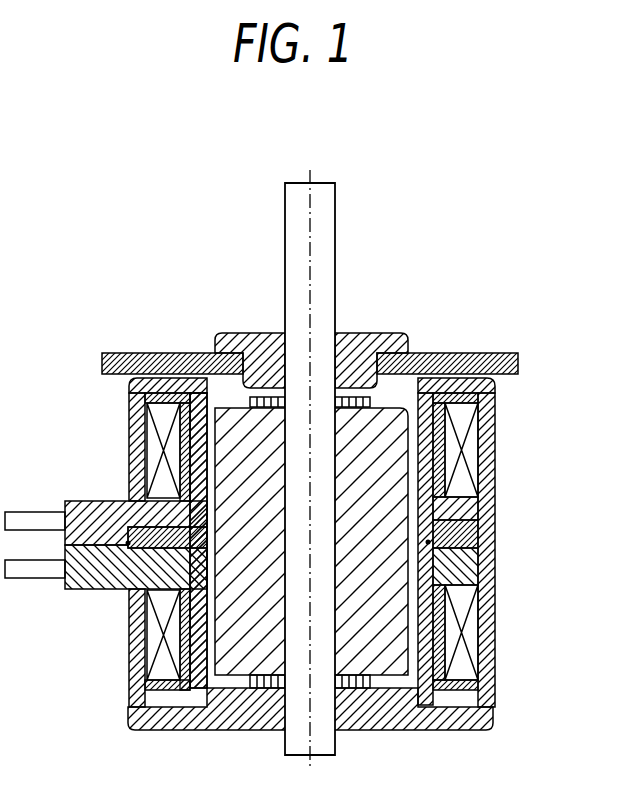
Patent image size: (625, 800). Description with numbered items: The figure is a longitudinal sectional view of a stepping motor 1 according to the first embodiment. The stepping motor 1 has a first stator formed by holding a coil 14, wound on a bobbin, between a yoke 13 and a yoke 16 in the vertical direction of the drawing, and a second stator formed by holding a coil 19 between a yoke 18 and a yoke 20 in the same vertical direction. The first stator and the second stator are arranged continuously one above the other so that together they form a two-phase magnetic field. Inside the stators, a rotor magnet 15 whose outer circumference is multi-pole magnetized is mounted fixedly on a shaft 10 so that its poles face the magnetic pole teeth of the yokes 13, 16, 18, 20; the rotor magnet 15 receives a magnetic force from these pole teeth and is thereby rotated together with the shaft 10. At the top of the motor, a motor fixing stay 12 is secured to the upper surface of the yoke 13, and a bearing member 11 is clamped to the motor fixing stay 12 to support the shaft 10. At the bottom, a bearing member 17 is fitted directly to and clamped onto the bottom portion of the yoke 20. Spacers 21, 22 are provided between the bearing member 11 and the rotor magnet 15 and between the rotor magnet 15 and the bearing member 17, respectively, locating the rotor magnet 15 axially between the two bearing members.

The stepping motor 1 is at (503, 318).
The shaft 10 is at (329, 217).
The bearing member 11 is at (384, 333).
The motor fixing stay 12 is at (172, 353).
The yoke 13 is at (130, 416).
The coil 14 is at (147, 466).
The rotor magnet 15 is at (388, 648).
The yoke 16 is at (485, 507).
The bearing member 17 is at (250, 722).
The yoke 18 is at (197, 690).
The coil 19 is at (147, 623).
The yoke 20 is at (137, 688).
The spacer 21 is at (372, 409).
The spacer 22 is at (355, 689).